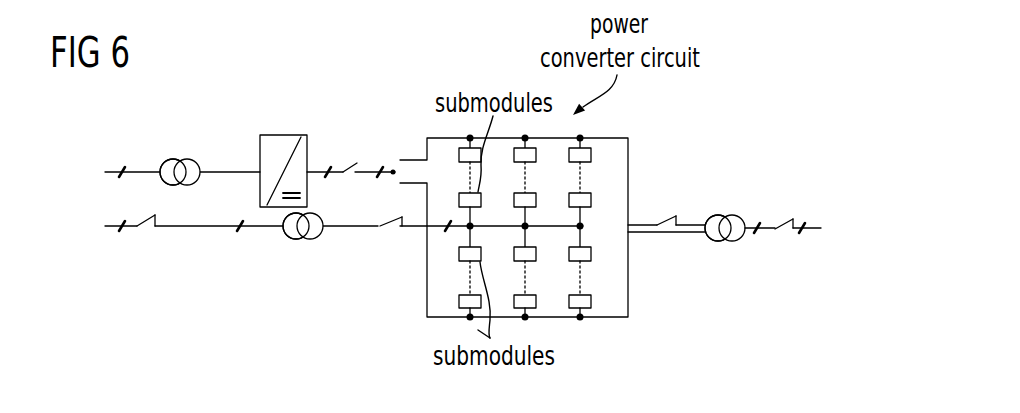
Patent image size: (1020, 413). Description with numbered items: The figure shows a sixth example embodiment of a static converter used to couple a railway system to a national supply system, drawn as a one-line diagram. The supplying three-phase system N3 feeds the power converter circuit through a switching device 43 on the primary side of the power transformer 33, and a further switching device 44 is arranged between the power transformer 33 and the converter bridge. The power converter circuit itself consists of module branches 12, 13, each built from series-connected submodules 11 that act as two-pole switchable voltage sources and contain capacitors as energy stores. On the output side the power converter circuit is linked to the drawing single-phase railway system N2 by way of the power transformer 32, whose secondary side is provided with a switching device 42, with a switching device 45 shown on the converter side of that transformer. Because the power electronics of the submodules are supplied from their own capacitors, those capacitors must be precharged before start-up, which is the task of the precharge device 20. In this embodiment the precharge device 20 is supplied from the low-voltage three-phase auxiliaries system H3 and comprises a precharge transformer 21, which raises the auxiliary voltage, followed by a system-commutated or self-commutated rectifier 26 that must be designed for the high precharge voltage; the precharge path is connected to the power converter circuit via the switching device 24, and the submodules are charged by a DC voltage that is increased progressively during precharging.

The submodule 11 is at (441, 282).
The module branch 12 is at (452, 164).
The lower phase module branch 13 is at (484, 300).
The precharge device 20 is at (259, 131).
The precharge transformer 21 is at (168, 158).
The switching device 24 is at (351, 162).
The rectifier 26 is at (288, 134).
The power transformer 32 is at (720, 214).
The power transformer 33 is at (293, 240).
The switching device 42 is at (779, 217).
The switching device 43 is at (143, 224).
The switching device 44 is at (393, 222).
The switch 45 is at (667, 214).
The three-phase auxiliary supply system H3 is at (96, 162).
The three-phase system N3 is at (96, 233).
The single-phase AC system N2 is at (832, 228).